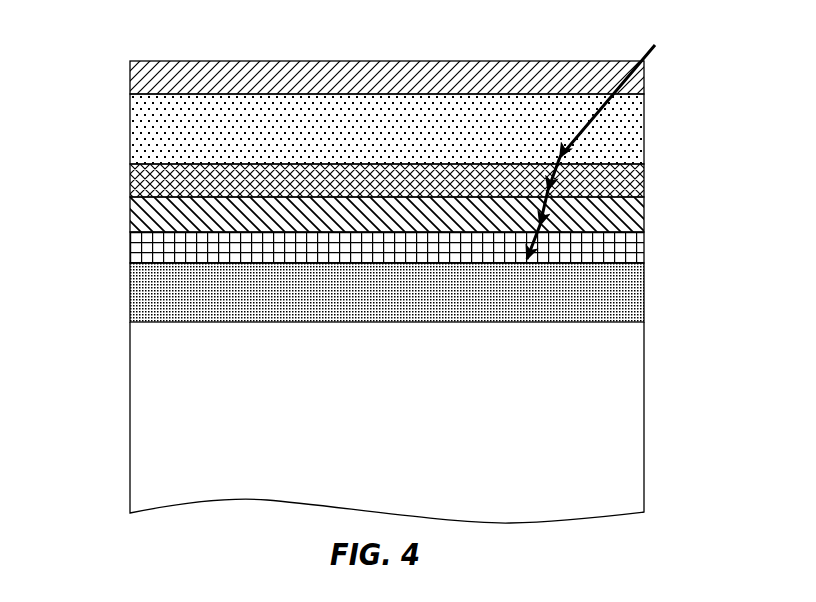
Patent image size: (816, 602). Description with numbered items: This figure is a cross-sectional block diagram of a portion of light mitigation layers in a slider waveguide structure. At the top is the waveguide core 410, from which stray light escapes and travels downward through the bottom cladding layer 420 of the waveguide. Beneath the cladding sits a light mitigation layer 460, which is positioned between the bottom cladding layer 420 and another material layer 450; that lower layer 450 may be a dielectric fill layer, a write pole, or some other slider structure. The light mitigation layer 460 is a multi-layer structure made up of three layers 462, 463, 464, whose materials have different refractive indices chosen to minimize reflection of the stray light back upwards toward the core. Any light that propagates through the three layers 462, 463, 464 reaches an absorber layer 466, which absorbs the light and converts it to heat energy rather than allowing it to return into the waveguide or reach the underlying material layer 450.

The waveguide core 410 is at (140, 77).
The bottom cladding layer 420 is at (140, 125).
The material layer 450 is at (140, 410).
The light mitigation layer 460 is at (668, 165).
The first layer of the multi-layer structure 462 is at (140, 175).
The second layer of the multi-layer structure 463 is at (140, 213).
The third layer of the multi-layer structure 464 is at (140, 250).
The absorber layer 466 is at (140, 300).